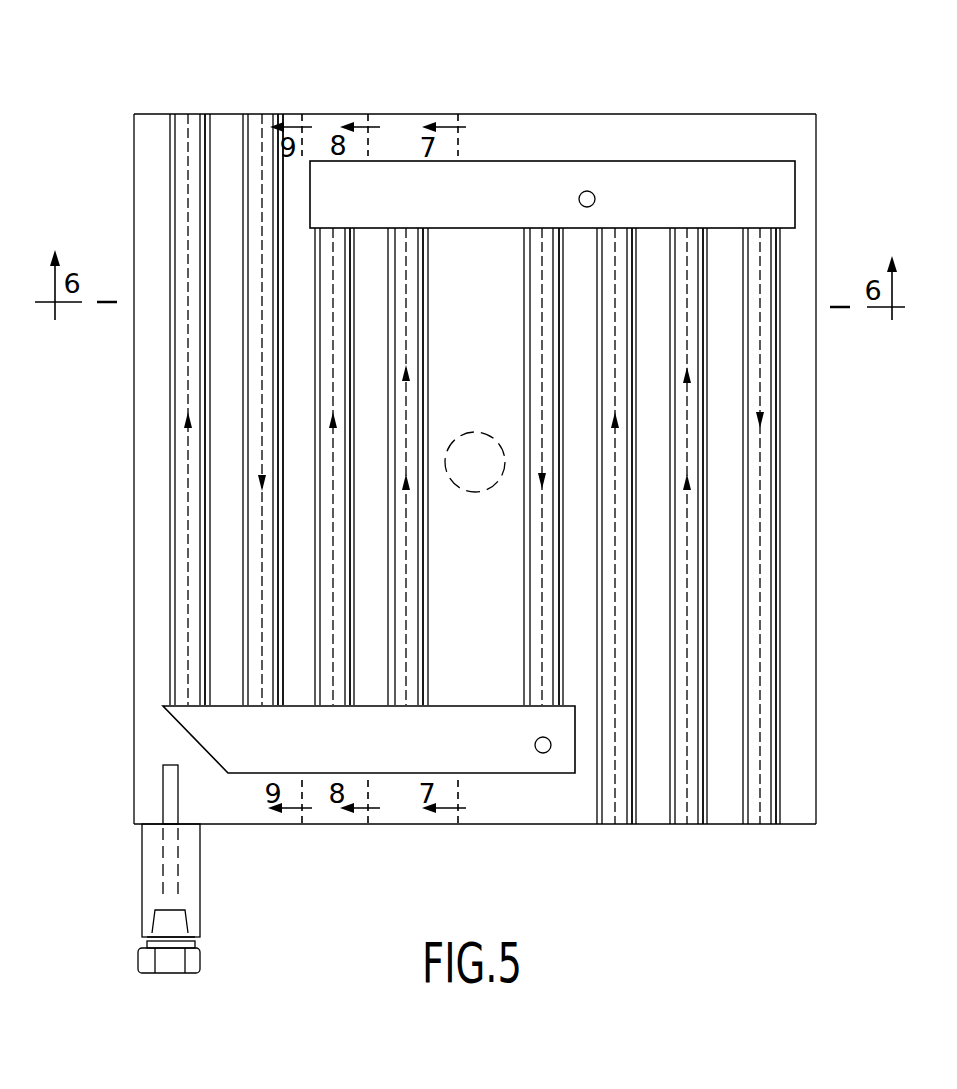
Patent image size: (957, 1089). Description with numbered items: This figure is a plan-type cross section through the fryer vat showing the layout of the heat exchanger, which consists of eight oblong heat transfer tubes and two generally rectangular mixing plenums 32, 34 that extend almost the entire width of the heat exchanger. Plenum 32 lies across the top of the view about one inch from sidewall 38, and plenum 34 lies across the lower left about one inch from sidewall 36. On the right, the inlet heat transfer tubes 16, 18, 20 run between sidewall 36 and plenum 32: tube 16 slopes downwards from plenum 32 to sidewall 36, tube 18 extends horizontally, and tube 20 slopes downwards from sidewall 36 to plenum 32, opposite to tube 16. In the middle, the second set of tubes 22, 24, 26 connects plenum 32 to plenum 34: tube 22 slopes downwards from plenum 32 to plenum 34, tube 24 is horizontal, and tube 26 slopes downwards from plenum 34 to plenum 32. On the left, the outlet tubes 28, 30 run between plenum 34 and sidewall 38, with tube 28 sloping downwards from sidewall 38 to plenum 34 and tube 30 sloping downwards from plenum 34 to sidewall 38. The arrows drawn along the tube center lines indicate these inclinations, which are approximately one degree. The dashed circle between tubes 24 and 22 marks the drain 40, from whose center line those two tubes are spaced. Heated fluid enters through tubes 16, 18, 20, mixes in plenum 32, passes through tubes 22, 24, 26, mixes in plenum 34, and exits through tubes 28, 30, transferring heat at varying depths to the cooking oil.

The inlet heat transfer tube 16 is at (758, 818).
The inlet heat transfer tube 18 is at (687, 818).
The inlet heat transfer tube 20 is at (613, 818).
The heat transfer tube 22 is at (524, 627).
The heat transfer tube 24 is at (428, 330).
The heat transfer tube 26 is at (355, 354).
The outlet heat transfer tube 28 is at (258, 122).
The outlet heat transfer tube 30 is at (188, 122).
The mixing plenum 32 is at (743, 167).
The mixing plenum 34 is at (513, 770).
The sidewall 36 is at (553, 826).
The sidewall 38 is at (482, 115).
The drain 40 is at (482, 492).